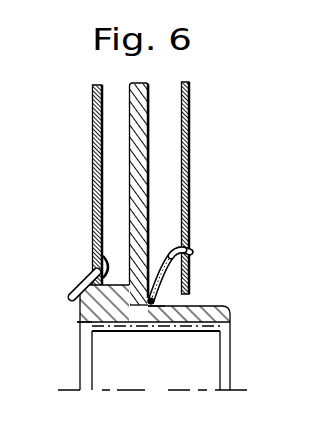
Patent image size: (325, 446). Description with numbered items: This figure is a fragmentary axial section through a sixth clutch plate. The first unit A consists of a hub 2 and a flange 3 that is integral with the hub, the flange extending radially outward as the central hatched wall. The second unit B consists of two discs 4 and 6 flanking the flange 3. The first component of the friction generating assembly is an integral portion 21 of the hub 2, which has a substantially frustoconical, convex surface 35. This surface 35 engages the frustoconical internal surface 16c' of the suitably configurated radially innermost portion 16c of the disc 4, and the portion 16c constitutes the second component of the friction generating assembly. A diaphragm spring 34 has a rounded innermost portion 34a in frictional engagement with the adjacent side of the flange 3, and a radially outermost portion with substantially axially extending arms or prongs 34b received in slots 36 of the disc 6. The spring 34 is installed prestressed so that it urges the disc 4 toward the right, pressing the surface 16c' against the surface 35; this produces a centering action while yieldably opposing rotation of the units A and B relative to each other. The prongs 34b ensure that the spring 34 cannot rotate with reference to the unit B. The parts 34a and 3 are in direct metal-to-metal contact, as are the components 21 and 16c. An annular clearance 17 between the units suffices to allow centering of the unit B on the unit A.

The hub 2 is at (239, 356).
The integral portion of the hub 21 is at (77, 323).
The flange 3 is at (150, 118).
The disc 4 is at (93, 134).
The disc 6 is at (191, 145).
The radially innermost portion of the disc 16c is at (66, 274).
The frustoconical internal surface 16c' is at (72, 238).
The annular clearance 17 is at (151, 310).
The diaphragm spring 34 is at (157, 282).
The rounded innermost portion 34a is at (158, 309).
The arms or prongs 34b is at (193, 249).
The frustoconical convex surface 35 is at (86, 290).
The slots 36 is at (192, 259).
The first unit A is at (156, 79).
The second unit B is at (200, 185).